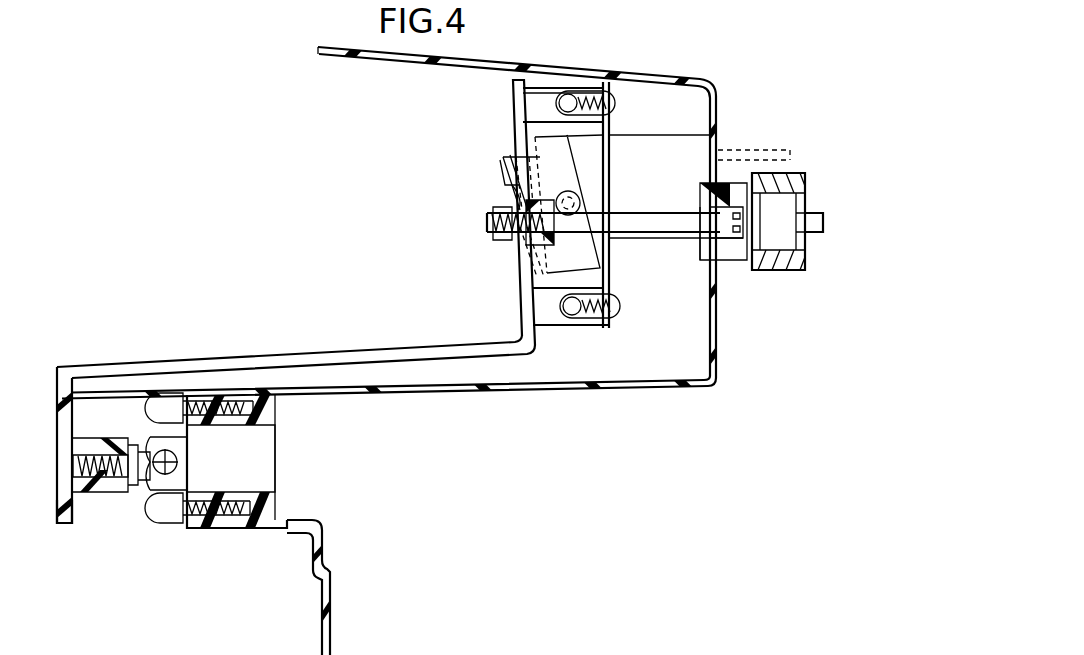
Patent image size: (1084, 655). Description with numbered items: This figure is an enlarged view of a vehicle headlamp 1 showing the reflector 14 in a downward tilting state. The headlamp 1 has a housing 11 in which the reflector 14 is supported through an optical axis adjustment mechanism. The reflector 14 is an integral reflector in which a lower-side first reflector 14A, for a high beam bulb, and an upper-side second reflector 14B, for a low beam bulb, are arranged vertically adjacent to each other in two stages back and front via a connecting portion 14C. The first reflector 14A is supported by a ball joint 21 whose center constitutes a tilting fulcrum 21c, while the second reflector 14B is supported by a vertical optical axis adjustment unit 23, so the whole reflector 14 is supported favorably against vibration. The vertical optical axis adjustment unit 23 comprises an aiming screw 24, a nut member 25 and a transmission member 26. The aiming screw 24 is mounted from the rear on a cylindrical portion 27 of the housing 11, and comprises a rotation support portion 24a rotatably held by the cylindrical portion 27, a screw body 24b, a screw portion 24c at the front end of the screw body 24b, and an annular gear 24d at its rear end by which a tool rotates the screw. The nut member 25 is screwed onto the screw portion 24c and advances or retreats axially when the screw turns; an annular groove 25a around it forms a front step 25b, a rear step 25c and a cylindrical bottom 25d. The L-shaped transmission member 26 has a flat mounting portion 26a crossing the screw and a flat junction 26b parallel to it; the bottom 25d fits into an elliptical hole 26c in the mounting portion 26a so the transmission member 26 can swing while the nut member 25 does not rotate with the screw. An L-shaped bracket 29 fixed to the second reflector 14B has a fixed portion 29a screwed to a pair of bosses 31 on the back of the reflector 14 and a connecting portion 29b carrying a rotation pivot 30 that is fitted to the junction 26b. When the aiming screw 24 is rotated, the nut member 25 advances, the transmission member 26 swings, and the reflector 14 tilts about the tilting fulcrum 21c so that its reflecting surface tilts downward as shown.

The headlamp 1 is at (195, 128).
The housing 11 is at (368, 393).
The reflector 14 is at (83, 356).
The first reflector 14A is at (60, 522).
The second reflector 14B is at (521, 313).
The connecting portion 14C is at (267, 352).
The ball joint 21 is at (167, 552).
The tilting fulcrum 21c is at (163, 472).
The vertical optical axis adjustment unit 23 is at (661, 102).
The aiming screw 24 is at (654, 204).
The rotation support portion 24a is at (734, 216).
The screw body 24b is at (681, 197).
The screw portion 24c is at (489, 221).
The annular gear 24d is at (764, 150).
The nut member 25 is at (487, 236).
The annular groove 25a is at (527, 233).
The front step 25b is at (503, 240).
The rear step 25c is at (523, 257).
The cylindrical bottom 25d is at (599, 153).
The transmission member 26 is at (428, 102).
The mounting portion 26a is at (504, 163).
The junction 26b is at (511, 150).
The hole 26c is at (520, 186).
The cylindrical portion 27 is at (733, 248).
The bracket 29 is at (703, 294).
The fixed portion 29a is at (618, 263).
The connecting portion 29b is at (612, 243).
The rotation pivot 30 is at (578, 190).
The bosses 31 is at (549, 88).